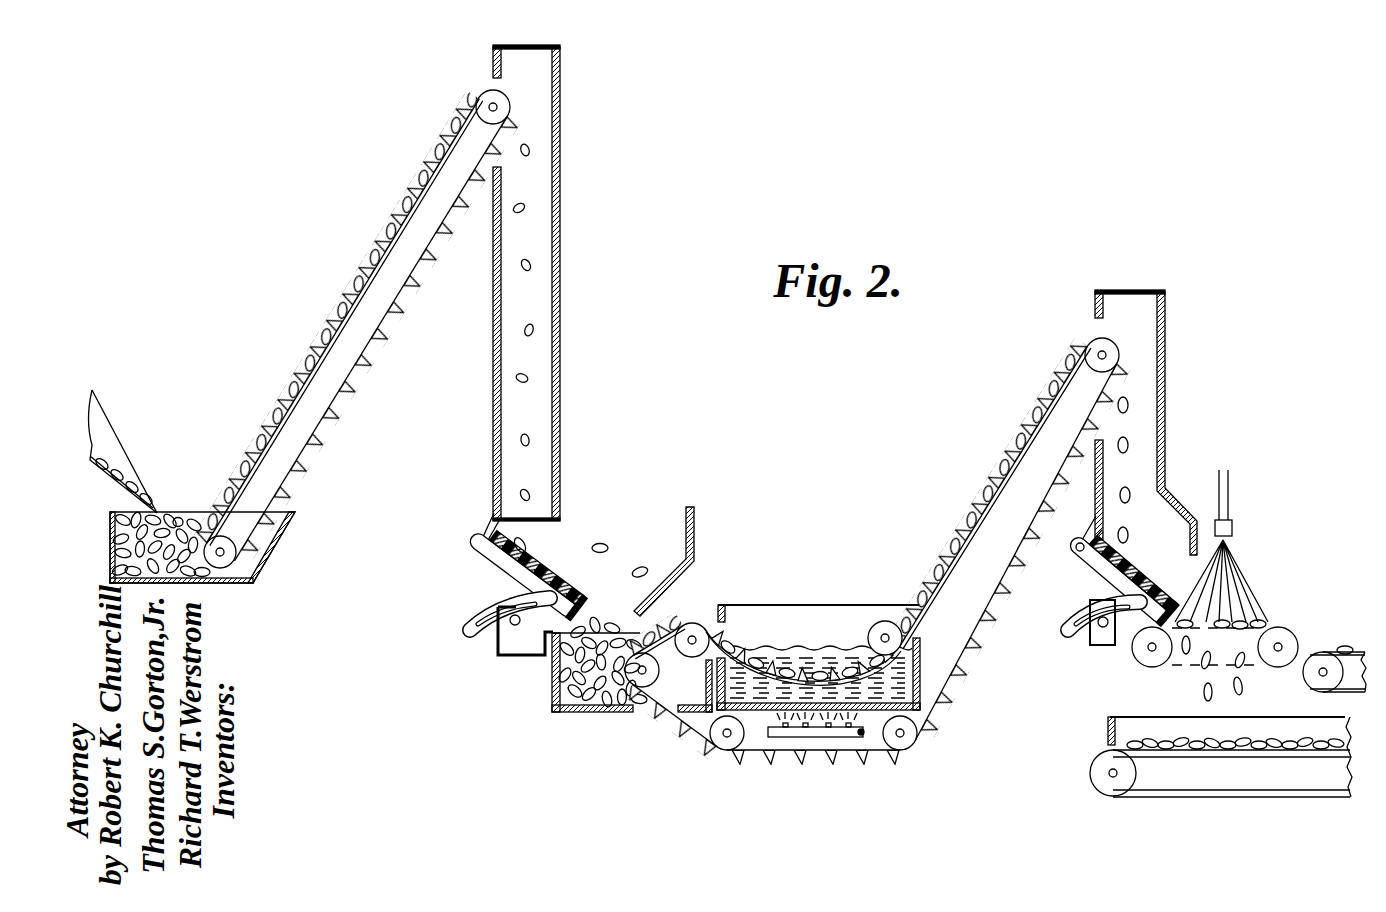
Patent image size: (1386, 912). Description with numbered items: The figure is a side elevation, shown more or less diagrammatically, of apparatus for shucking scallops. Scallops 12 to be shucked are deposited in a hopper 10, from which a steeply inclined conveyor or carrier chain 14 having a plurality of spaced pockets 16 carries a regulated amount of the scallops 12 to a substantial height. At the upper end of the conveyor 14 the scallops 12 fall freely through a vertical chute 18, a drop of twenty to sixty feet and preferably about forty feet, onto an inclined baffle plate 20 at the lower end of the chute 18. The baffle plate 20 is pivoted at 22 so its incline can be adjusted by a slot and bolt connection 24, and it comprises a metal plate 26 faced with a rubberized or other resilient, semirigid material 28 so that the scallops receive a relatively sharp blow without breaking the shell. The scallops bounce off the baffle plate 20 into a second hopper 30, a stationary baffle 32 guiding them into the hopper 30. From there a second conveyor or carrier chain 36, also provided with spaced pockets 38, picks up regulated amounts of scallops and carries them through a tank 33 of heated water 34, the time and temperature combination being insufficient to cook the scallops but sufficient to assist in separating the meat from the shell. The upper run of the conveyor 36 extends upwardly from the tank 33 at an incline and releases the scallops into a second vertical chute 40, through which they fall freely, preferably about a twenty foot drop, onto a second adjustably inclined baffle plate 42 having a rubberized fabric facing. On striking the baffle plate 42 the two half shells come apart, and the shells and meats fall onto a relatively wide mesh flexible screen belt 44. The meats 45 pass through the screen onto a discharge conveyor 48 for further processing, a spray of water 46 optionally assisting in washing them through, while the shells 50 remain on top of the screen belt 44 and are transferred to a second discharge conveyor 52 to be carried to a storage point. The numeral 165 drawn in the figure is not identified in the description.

The hopper 10 is at (280, 546).
The scallops 12 is at (531, 262).
The conveyor or carrier chain 14 is at (357, 329).
The spaced pockets 16 is at (308, 355).
The vertical chute 18 is at (556, 121).
The inclined baffle plate 20 is at (550, 562).
The pivot 22 is at (475, 543).
The slot and bolt connection 24 is at (468, 610).
The metal plate 26 is at (505, 566).
The resilient material facing 28 is at (572, 591).
The second hopper 30 is at (553, 672).
The stationary baffle 32 is at (694, 541).
The tank 33 is at (818, 650).
The heated water 34 is at (790, 648).
The second conveyor or carrier chain 36 is at (877, 551).
The spaced pockets 38 is at (968, 540).
The second vertical chute 40 is at (1165, 370).
The second adjustably inclined baffle plate 42 is at (1139, 548).
The mesh flexible screen belt 44 is at (1270, 623).
The meats 45 is at (1240, 698).
The spray of water 46 is at (1244, 567).
The discharge conveyor 48 is at (1100, 760).
The shells 50 is at (1303, 640).
The second discharge conveyor 52 is at (1352, 691).
The feed chute 165 is at (114, 446).